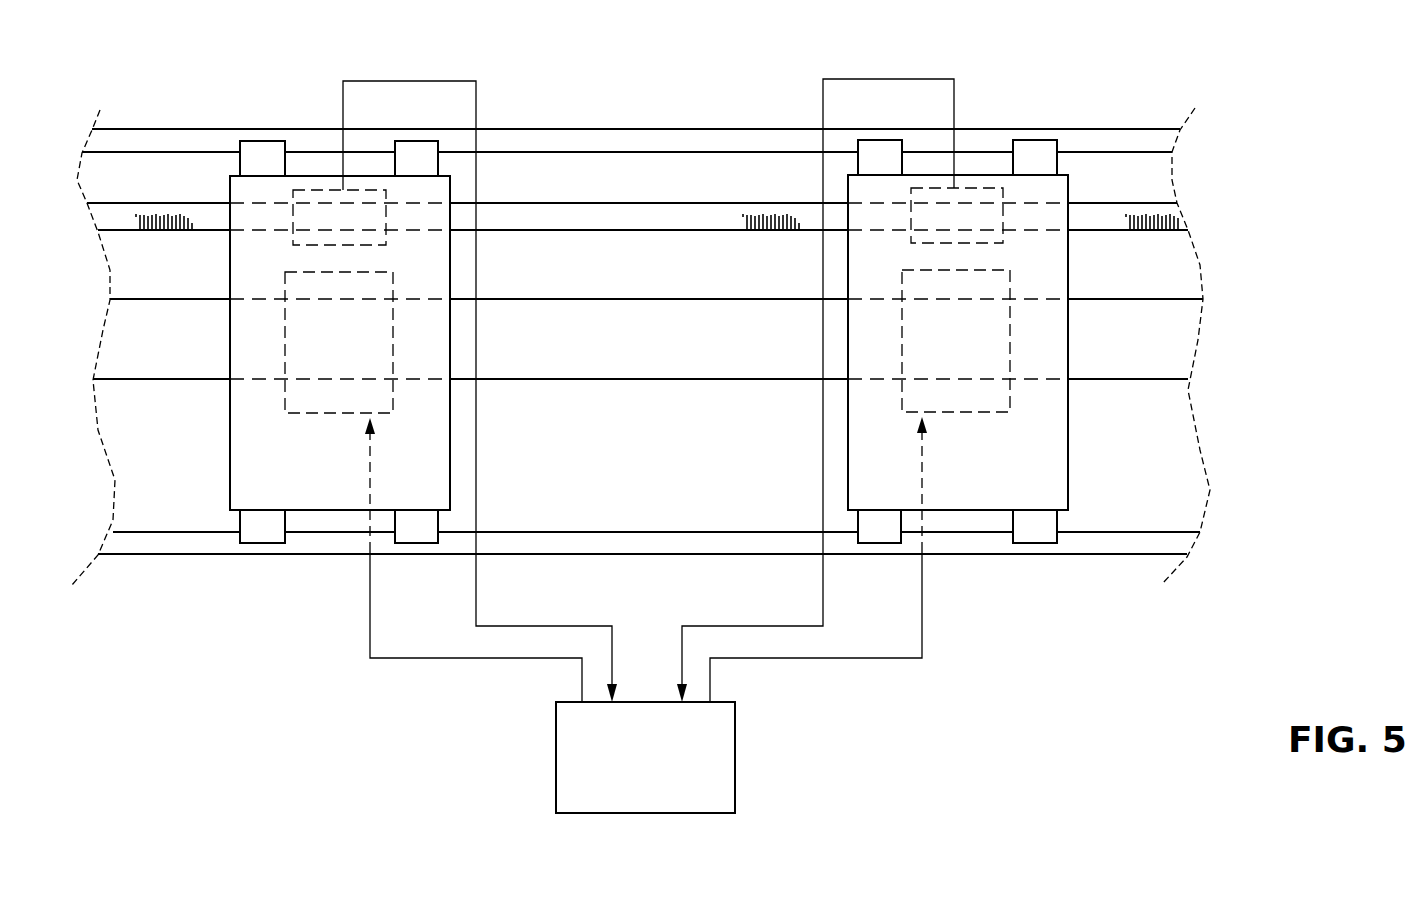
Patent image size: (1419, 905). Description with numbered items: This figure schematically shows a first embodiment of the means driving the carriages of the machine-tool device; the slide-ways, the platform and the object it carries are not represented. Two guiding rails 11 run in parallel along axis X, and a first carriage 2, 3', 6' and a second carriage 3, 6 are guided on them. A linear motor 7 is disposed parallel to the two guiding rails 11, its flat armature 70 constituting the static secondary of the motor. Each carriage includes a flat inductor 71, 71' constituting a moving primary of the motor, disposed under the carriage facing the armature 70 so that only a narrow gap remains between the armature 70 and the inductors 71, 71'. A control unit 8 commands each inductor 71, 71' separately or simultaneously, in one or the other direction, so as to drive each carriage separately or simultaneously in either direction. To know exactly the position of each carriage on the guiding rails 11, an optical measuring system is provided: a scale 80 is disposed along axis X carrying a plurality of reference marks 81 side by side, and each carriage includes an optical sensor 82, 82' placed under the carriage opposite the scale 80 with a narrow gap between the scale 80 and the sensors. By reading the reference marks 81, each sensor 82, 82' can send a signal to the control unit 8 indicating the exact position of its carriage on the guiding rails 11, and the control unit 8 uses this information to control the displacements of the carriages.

The first carriage 2 is at (417, 397).
The drive unit 3' is at (417, 397).
The linear motor 6' is at (417, 397).
The second carriage 3 is at (872, 363).
The linear motor 6 is at (872, 363).
The linear motor 7 is at (649, 387).
The flat armature 70 is at (724, 358).
The flat inductor 71 is at (863, 486).
The flat inductor 71' is at (417, 487).
The control unit 8 is at (650, 767).
The scale 80 is at (594, 215).
The reference figures 81 is at (162, 232).
The optical sensor 82 is at (862, 363).
The optical sensor 82' is at (435, 363).
The guiding rails 11 is at (1137, 133).